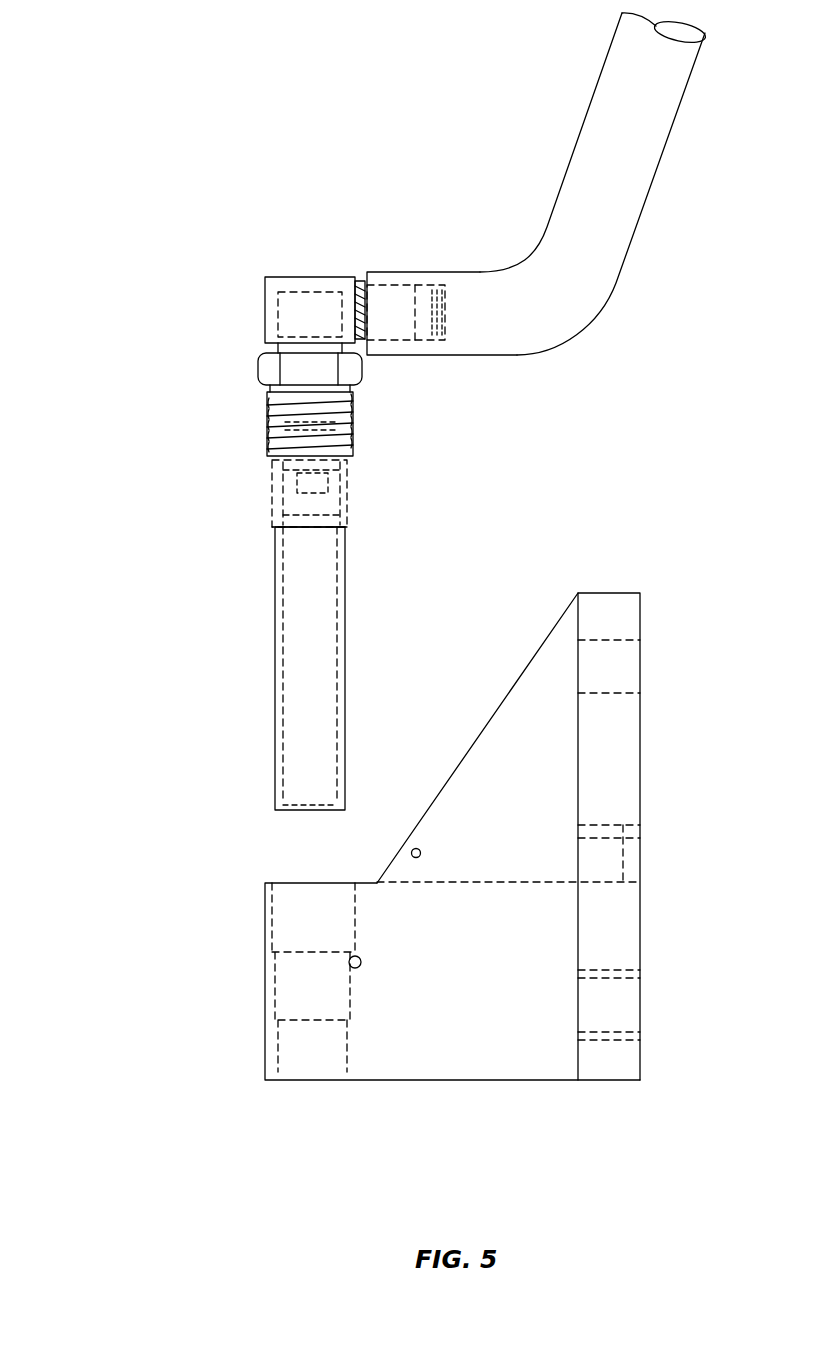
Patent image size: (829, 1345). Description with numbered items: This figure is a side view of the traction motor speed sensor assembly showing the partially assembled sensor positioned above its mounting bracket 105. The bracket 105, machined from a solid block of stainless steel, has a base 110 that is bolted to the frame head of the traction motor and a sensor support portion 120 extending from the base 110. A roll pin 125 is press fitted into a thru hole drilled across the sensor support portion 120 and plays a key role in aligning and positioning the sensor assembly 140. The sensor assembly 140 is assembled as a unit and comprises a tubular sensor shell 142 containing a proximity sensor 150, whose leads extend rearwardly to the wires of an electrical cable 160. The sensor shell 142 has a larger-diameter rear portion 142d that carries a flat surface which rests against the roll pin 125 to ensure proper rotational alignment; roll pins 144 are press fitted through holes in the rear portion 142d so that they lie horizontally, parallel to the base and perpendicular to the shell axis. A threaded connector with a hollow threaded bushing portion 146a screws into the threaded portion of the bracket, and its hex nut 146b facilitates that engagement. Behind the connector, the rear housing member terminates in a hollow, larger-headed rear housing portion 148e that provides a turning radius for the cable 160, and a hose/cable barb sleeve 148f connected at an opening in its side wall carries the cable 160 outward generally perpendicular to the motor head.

The mounting bracket 105 is at (539, 1120).
The base 110 is at (620, 670).
The sensor support portion 120 is at (521, 1032).
The roll pin 125 is at (360, 967).
The sensor assembly 140 is at (93, 67).
The sensor shell 142 is at (273, 682).
The rear portion 142d is at (347, 525).
The roll pins 144 is at (310, 478).
The threaded bushing portion 146a is at (270, 430).
The hex nut 146b is at (267, 372).
The rear housing portion 148e is at (265, 300).
The hose/cable barb sleeve 148f is at (400, 283).
The proximity sensor 150 is at (322, 725).
The electrical cable 160 is at (547, 312).